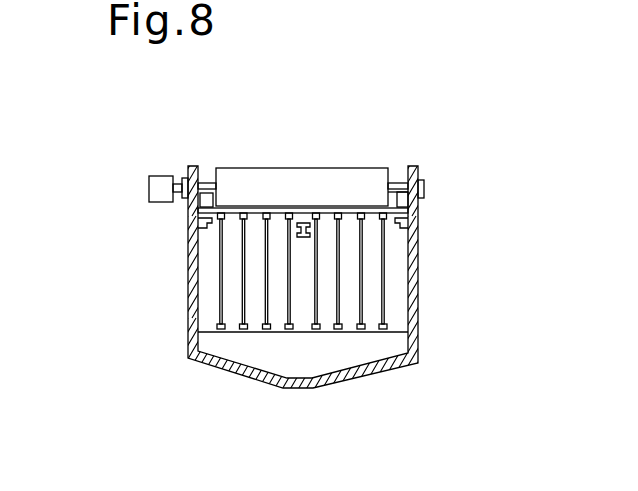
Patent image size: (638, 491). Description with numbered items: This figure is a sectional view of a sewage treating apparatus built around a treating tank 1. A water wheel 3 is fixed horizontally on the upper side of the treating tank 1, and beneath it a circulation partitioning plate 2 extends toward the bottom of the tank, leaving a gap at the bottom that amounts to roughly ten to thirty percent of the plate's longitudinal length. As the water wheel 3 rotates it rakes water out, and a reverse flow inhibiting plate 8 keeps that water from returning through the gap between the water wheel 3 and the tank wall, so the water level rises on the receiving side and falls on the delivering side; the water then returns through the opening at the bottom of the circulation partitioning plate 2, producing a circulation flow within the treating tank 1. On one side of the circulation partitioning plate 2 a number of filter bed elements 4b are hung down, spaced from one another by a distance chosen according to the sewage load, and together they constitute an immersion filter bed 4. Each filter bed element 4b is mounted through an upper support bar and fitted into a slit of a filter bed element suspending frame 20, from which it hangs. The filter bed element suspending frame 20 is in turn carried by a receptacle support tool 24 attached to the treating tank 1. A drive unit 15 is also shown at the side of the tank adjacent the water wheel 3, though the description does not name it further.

The treating tank 1 is at (418, 312).
The circulation partitioning plate 2 is at (203, 317).
The water wheel 3 is at (360, 167).
The immersion filter bed 4 is at (341, 312).
The filter bed element 4b is at (386, 256).
The reverse flow inhibiting plate 8 is at (403, 203).
The drive motor 15 is at (161, 174).
The filter bed element suspending frame 20 is at (273, 215).
The receptacle support tool 24 is at (295, 228).